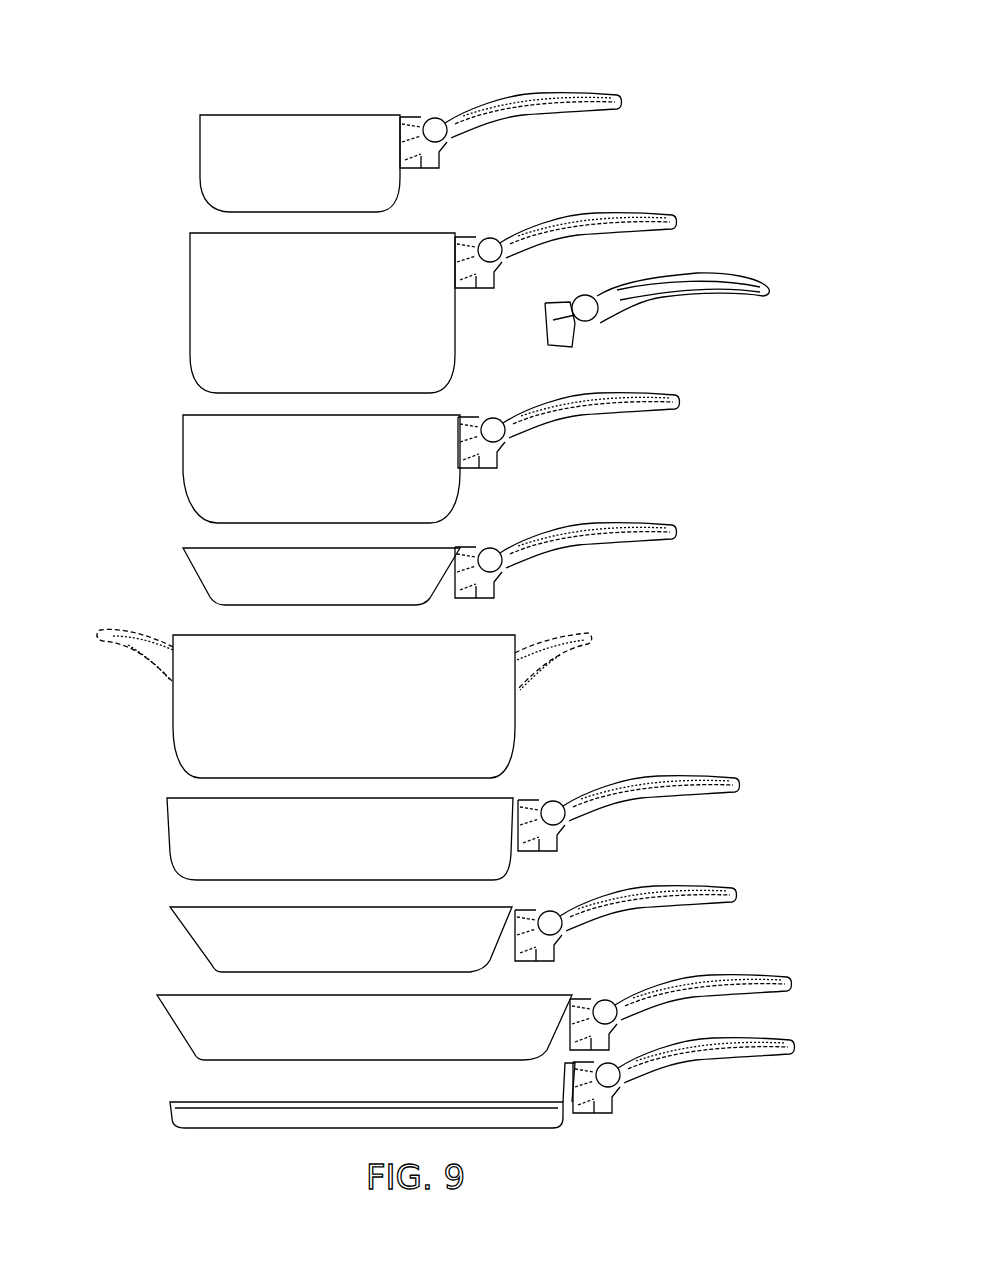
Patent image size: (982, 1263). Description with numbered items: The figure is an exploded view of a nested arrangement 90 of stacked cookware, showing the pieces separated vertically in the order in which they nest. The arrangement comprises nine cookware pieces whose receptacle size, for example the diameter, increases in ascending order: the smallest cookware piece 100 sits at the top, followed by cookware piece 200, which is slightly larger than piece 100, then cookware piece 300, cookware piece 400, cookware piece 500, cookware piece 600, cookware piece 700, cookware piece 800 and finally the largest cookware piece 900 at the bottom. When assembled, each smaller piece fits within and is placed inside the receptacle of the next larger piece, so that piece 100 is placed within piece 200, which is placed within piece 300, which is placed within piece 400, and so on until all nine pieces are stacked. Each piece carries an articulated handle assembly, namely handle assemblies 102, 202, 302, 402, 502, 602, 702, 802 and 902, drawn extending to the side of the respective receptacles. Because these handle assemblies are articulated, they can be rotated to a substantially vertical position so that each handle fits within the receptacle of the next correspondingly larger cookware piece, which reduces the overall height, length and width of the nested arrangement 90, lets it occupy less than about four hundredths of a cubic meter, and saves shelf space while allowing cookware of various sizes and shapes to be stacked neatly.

The nested arrangement 90 is at (253, 65).
The cookware piece 100 is at (200, 163).
The handle assembly 102 is at (536, 93).
The cookware piece 200 is at (190, 305).
The handle assembly 202 is at (587, 216).
The cookware piece 300 is at (183, 462).
The handle assembly 302 is at (600, 393).
The cookware piece 400 is at (193, 572).
The handle assembly 402 is at (600, 521).
The cookware piece 500 is at (173, 718).
The handle assembly 502 is at (553, 634).
The cookware piece 600 is at (167, 838).
The handle assembly 602 is at (663, 777).
The cookware piece 700 is at (170, 940).
The handle assembly 702 is at (627, 890).
The cookware piece 800 is at (173, 1037).
The handle assembly 802 is at (693, 975).
The cookware piece 900 is at (170, 1111).
The handle assembly 902 is at (703, 1063).